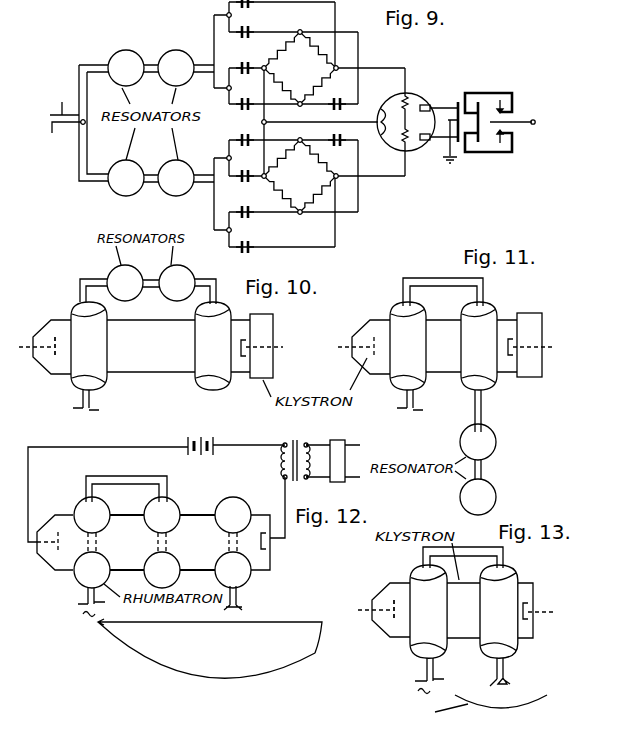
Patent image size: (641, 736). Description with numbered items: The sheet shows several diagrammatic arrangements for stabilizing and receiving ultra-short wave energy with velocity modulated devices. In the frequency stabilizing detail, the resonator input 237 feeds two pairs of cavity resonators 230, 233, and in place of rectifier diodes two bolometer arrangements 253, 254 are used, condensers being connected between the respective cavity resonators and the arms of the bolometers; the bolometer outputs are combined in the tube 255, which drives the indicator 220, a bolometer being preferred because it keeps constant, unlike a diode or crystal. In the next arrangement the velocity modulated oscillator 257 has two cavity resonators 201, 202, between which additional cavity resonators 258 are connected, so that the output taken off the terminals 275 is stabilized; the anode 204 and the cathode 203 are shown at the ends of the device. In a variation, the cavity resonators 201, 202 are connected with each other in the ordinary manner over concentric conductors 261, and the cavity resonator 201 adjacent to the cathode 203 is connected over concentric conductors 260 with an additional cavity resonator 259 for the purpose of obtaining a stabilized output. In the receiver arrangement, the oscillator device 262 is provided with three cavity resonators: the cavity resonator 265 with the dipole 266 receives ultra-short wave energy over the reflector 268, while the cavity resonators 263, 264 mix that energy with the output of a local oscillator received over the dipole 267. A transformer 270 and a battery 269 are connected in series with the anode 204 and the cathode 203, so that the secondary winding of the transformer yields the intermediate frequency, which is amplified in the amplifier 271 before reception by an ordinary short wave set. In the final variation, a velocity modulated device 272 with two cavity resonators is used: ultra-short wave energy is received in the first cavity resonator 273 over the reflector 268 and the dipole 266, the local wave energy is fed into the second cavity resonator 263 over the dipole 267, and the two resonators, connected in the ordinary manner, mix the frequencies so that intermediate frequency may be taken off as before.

In FIG. 9, the input coupling / wave guide 237 is at (77, 123).
In FIG. 9, the resonators (upper pair) 230 is at (149, 61).
In FIG. 9, the resonators (lower pair) 233 is at (153, 170).
In FIG. 9, the bolometer arrangement 253 is at (300, 68).
In FIG. 9, the bolometer arrangement 254 is at (300, 176).
In FIG. 9, the electron discharge tube 255 is at (391, 98).
In FIG. 9, the indicator / deflection electrode assembly 220 is at (469, 94).
In FIG. 10, the velocity modulated oscillator 257 is at (55, 318).
In FIG. 11, the velocity modulated oscillator 257 is at (377, 318).
In FIG. 10, the anode 204 is at (57, 354).
In FIG. 12, the anode 204 is at (55, 547).
In FIG. 13, the anode 204 is at (395, 614).
In FIG. 10, the cavity resonators 258 is at (150, 277).
In FIG. 10, the cavity resonator 202 is at (107, 337).
In FIG. 11, the cavity resonator 202 is at (408, 346).
In FIG. 10, the cavity resonator 201 is at (195, 361).
In FIG. 11, the cavity resonator 201 is at (471, 346).
In FIG. 10, the terminals 275 is at (91, 411).
In FIG. 11, the terminals 275 is at (411, 411).
In FIG. 11, the concentric conductors 261 is at (443, 281).
In FIG. 11, the cathode 203 is at (515, 343).
In FIG. 12, the cathode 203 is at (266, 545).
In FIG. 13, the cathode 203 is at (531, 612).
In FIG. 11, the concentric conductors 260 is at (483, 404).
In FIG. 11, the additional cavity resonator 259 is at (485, 467).
In FIG. 12, the battery 269 is at (215, 444).
In FIG. 12, the transformer 270 is at (290, 479).
In FIG. 12, the amplifier 271 is at (333, 451).
In FIG. 12, the oscillator device 262 is at (57, 515).
In FIG. 12, the cavity resonator 263 is at (99, 530).
In FIG. 13, the cavity resonator 263 is at (456, 602).
In FIG. 12, the cavity resonator 264 is at (169, 531).
In FIG. 12, the cavity resonator 265 is at (229, 499).
In FIG. 12, the dipole 267 is at (106, 603).
In FIG. 13, the dipole 267 is at (419, 683).
In FIG. 12, the dipole 266 is at (240, 604).
In FIG. 13, the dipole 266 is at (508, 679).
In FIG. 12, the reflector 268 is at (262, 677).
In FIG. 13, the reflector 268 is at (503, 710).
In FIG. 13, the velocity modulated device 272 is at (384, 600).
In FIG. 13, the first cavity resonator 273 is at (490, 611).